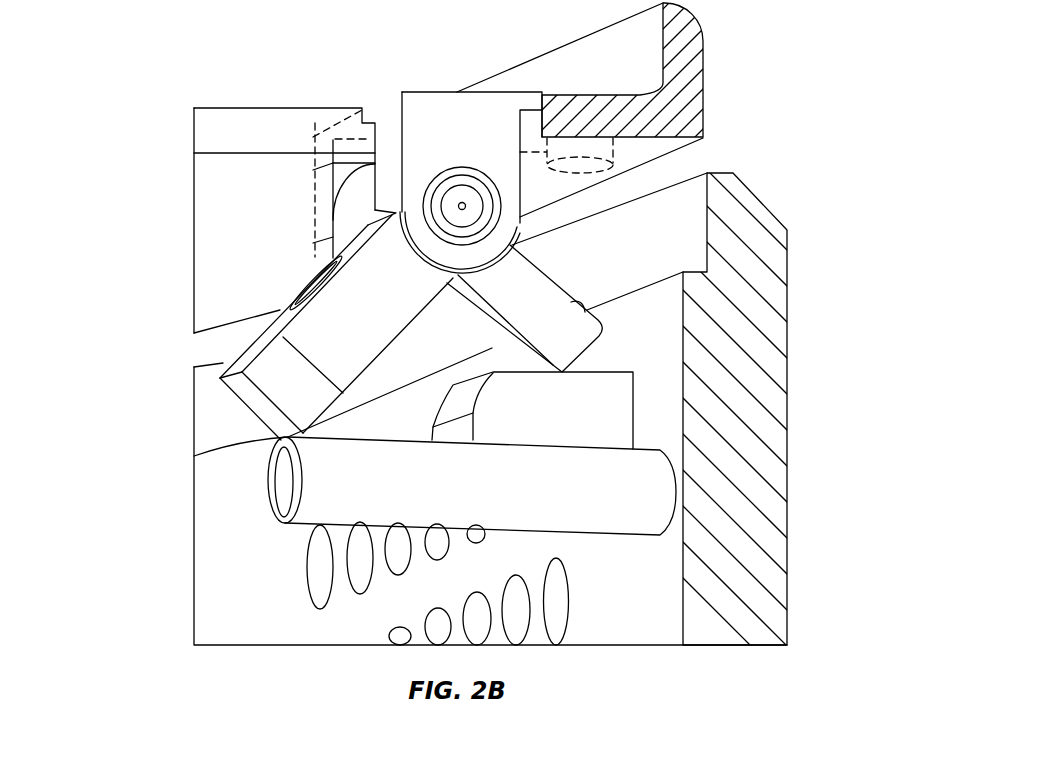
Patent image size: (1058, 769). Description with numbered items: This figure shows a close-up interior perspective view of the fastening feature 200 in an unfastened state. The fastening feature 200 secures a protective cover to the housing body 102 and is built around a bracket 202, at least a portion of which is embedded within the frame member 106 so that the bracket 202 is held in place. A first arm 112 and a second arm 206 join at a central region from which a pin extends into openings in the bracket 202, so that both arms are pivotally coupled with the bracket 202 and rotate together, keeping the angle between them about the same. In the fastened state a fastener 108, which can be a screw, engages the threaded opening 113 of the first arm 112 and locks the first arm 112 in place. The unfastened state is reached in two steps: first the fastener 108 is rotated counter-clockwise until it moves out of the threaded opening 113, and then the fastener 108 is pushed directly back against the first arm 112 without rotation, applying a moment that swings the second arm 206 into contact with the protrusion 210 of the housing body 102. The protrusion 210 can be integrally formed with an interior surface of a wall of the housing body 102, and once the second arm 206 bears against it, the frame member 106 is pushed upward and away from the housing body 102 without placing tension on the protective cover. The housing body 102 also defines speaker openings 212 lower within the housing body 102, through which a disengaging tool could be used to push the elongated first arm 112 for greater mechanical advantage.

The fastening feature 200 is at (172, 96).
The housing body 102 is at (716, 574).
The frame member 106 is at (608, 129).
The bracket 202 is at (446, 148).
The second arm 206 is at (510, 308).
The first arm 112 is at (343, 330).
The threaded opening 113 is at (304, 291).
The protrusion 210 is at (548, 419).
The fastener 108 is at (586, 505).
The speaker openings 212 is at (568, 580).